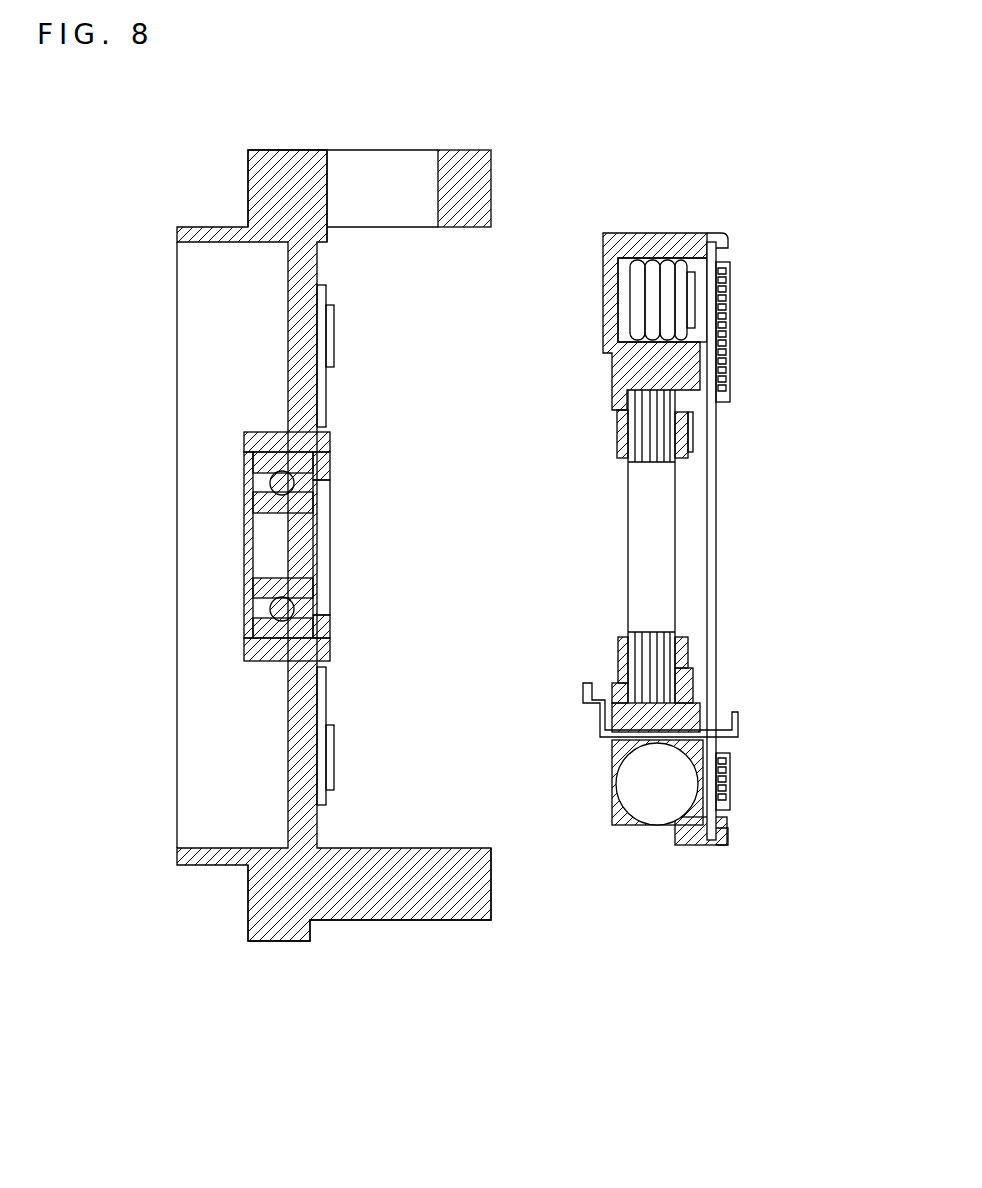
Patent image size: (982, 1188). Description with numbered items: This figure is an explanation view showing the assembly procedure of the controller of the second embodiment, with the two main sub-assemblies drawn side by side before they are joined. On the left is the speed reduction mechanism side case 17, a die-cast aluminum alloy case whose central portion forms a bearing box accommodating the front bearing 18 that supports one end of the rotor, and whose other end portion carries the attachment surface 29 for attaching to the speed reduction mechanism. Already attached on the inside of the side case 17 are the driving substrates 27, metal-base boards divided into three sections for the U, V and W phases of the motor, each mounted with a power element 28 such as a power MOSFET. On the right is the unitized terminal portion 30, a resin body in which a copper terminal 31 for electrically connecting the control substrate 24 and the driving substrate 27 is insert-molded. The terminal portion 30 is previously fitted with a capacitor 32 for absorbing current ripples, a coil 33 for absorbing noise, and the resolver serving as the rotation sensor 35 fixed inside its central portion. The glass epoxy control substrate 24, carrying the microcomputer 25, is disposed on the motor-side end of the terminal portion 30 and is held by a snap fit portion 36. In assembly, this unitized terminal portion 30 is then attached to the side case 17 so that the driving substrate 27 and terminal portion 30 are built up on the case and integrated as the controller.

The speed reduction mechanism side case 17 is at (287, 943).
The front bearing 18 is at (244, 632).
The control substrate 24 is at (717, 427).
The microcomputer 25 is at (733, 293).
The driving substrate 27 is at (326, 383).
The power element 28 is at (334, 343).
The attachment surface 29 is at (248, 183).
The terminal portion 30 is at (630, 232).
The terminal 31 is at (740, 715).
The capacitor 32 is at (657, 827).
The coil 33 is at (677, 267).
The rotation sensor 35 is at (618, 643).
The snap fit portion 36 is at (730, 238).